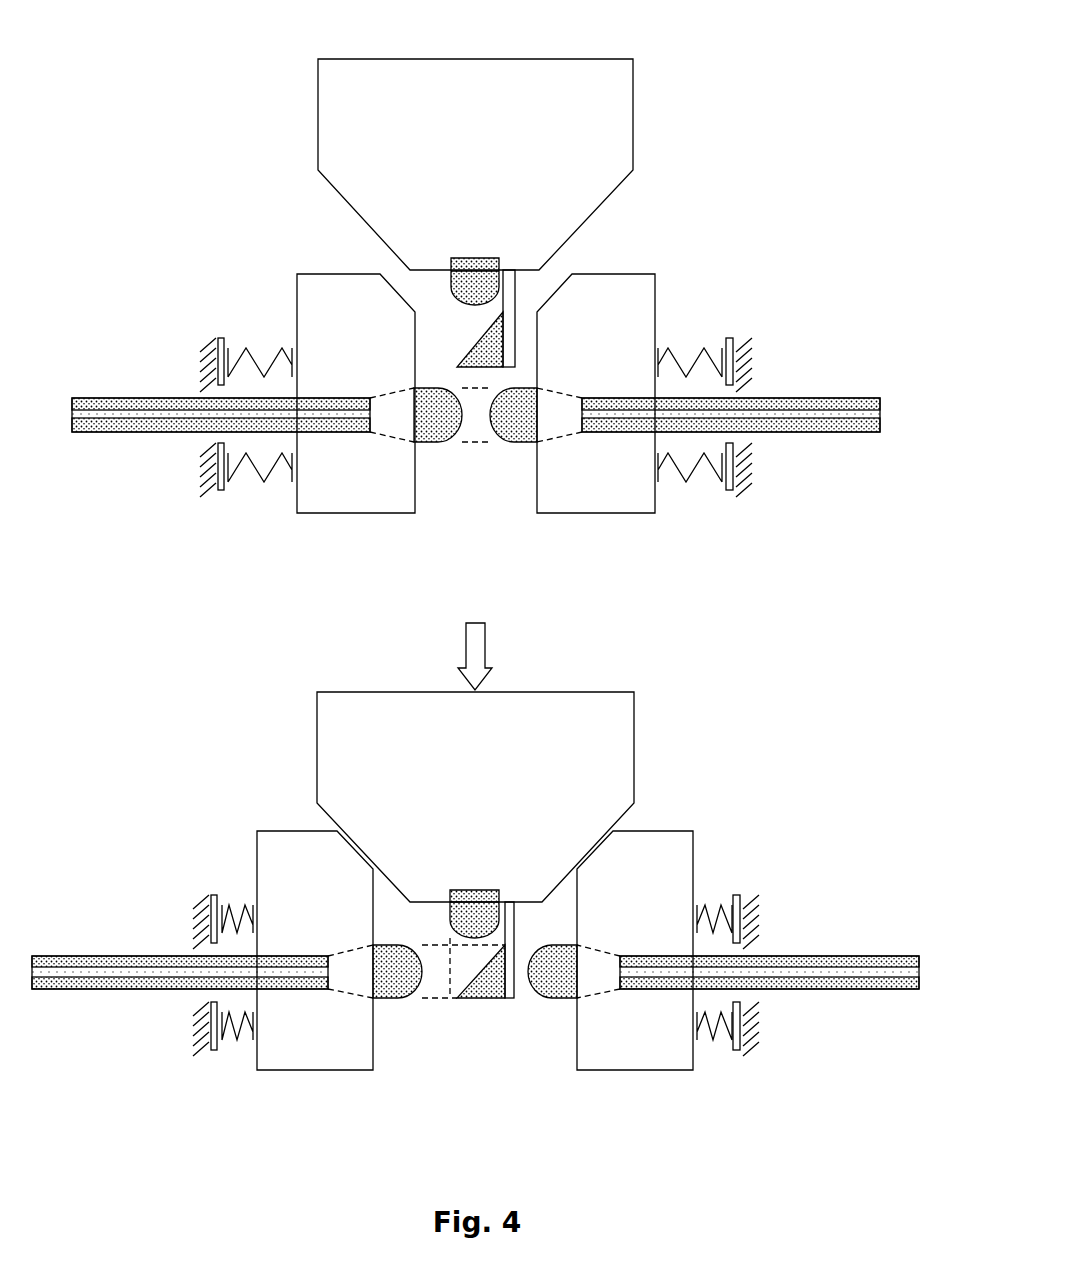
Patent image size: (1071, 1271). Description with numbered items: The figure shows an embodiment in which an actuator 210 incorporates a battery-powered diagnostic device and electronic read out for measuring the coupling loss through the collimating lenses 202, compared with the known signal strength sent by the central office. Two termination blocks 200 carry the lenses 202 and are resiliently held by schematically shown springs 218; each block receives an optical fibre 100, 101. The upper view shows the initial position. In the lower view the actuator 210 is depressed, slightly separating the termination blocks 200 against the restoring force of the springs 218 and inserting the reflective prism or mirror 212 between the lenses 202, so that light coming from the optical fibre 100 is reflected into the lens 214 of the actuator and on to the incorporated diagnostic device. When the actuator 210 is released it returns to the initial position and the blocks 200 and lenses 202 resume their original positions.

The optical fibre 100 is at (110, 400).
The second substrate 101 is at (797, 400).
The termination block 200 is at (347, 498).
The collimating lens 202 is at (520, 438).
The actuator 210 is at (615, 102).
The reflective prism or mirror 212 is at (483, 340).
The lens of the actuator 214 is at (498, 297).
The spring 218 is at (262, 348).